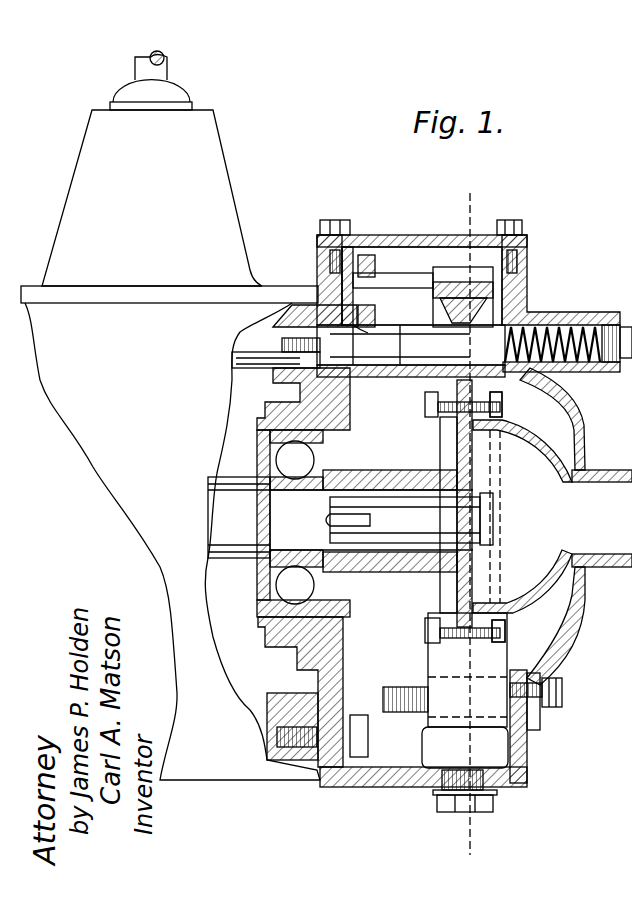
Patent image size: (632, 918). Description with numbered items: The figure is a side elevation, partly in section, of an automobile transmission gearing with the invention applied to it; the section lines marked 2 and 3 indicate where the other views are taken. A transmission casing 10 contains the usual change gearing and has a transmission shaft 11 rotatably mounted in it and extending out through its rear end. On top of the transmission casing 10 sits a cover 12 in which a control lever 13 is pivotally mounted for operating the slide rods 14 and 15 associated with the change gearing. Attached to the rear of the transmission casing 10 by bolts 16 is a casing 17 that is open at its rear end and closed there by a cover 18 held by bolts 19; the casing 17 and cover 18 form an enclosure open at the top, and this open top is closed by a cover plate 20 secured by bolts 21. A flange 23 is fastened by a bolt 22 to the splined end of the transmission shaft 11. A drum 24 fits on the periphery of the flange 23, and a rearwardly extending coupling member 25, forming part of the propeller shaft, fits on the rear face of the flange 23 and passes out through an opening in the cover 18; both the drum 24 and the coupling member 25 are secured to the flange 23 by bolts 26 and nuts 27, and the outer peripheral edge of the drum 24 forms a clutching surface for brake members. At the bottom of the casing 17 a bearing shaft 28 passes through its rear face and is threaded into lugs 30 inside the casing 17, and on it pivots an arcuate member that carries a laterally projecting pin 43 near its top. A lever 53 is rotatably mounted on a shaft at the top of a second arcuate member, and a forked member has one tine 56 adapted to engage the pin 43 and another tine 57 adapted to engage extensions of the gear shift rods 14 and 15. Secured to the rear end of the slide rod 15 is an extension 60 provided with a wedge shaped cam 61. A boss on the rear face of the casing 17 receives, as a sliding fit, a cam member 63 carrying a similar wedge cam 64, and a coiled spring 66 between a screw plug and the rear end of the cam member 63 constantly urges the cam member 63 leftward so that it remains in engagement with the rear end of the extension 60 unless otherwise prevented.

The section line 2- 2 is at (460, 197).
The view direction 3 is at (207, 338).
The transmission casing 10 is at (123, 349).
The transmission shaft 11 is at (236, 550).
The cover 12 is at (222, 173).
The control lever 13 is at (167, 63).
The slide rod 14 is at (249, 370).
The slide rod 15 is at (312, 330).
The bolts 16 is at (363, 760).
The casing 17 is at (403, 787).
The cover 18 is at (583, 625).
The bolts 19 is at (562, 700).
The cover plate 20 is at (412, 235).
The bolts 21 is at (322, 220).
The bolt 22 is at (490, 515).
The flange 23 is at (470, 593).
The drum 24 is at (457, 660).
The coupling member 25 is at (607, 480).
The bolts 26 is at (505, 397).
The nuts 27 is at (425, 402).
The bearing shaft 28 is at (447, 710).
The lugs 30 is at (383, 687).
The pin 43 is at (413, 277).
The lever 53 is at (523, 303).
The tine 56 is at (362, 255).
The tine 57 is at (370, 305).
The extension 60 is at (333, 330).
The wedge shaped cam 61 is at (362, 333).
The cam member 63 is at (493, 337).
The wedge cam 64 is at (447, 322).
The coiled spring 66 is at (577, 313).